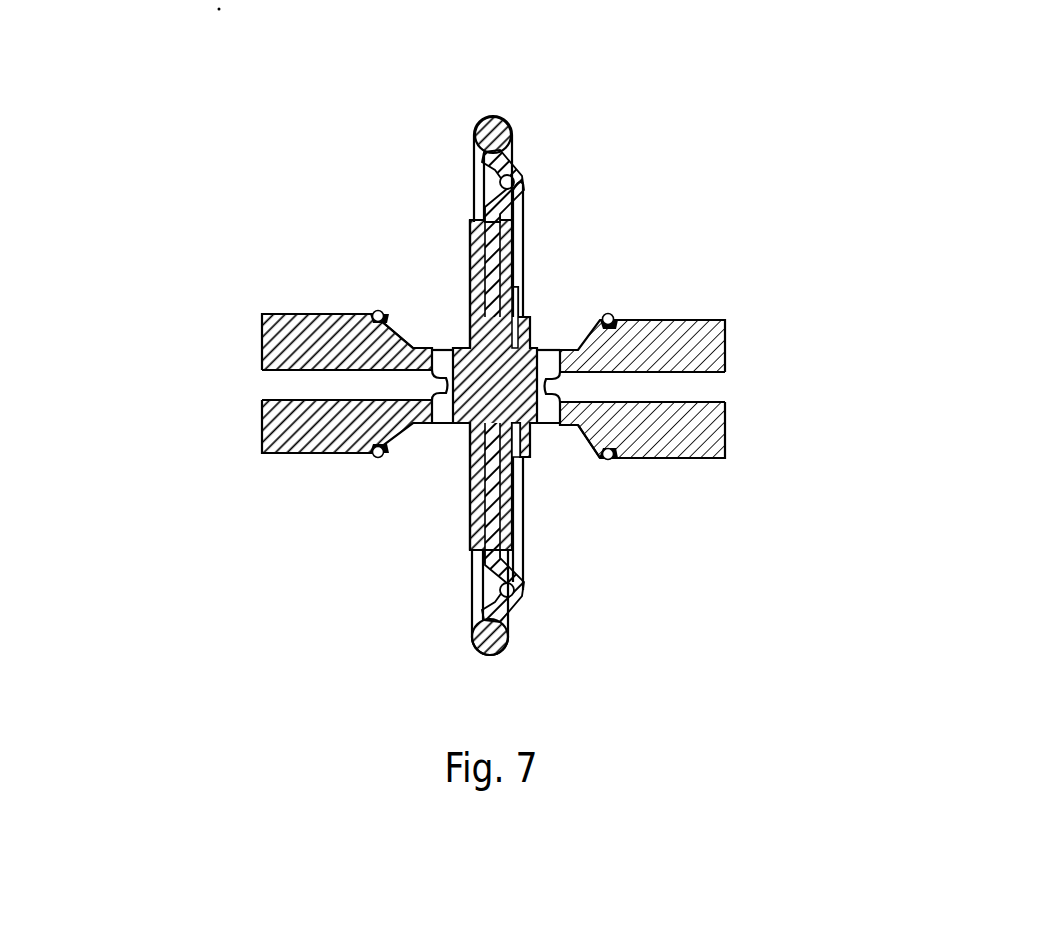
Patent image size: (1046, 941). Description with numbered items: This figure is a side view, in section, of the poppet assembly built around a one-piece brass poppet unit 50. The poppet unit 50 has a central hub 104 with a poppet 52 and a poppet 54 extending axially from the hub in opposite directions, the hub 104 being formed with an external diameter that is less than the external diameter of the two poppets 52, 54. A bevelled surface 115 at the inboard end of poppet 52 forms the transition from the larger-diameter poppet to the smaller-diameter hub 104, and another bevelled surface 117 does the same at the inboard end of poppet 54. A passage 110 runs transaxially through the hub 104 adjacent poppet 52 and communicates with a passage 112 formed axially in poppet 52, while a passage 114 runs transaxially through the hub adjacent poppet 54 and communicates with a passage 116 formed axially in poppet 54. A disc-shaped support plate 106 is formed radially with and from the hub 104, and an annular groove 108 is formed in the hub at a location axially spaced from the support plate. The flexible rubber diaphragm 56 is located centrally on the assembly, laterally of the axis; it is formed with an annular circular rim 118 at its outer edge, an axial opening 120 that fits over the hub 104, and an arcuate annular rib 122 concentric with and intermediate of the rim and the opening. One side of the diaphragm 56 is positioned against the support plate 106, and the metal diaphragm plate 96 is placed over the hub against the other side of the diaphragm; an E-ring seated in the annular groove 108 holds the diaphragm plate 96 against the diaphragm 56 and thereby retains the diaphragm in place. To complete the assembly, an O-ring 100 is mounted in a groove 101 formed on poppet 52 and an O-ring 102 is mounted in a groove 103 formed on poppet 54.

The poppet unit 50 is at (716, 309).
The poppet 52 is at (283, 453).
The poppet 54 is at (698, 438).
The flexible diaphragm 56 is at (540, 187).
The diaphragm plate 96 is at (525, 297).
The O-ring 100 is at (375, 311).
The groove 101 is at (381, 450).
The O-ring 102 is at (612, 314).
The groove 103 is at (608, 460).
The central hub 104 is at (467, 423).
The support plate 106 is at (470, 242).
The annular groove 108 is at (525, 507).
The passage 110 is at (440, 421).
The passage 112 is at (280, 393).
The passage 114 is at (553, 347).
The bevelled surface 115 is at (413, 325).
The passage 116 is at (697, 377).
The bevelled surface 117 is at (585, 432).
The annular circular rim 118 is at (504, 122).
The axial opening 120 is at (450, 347).
The arcuate annular rib 122 is at (514, 176).